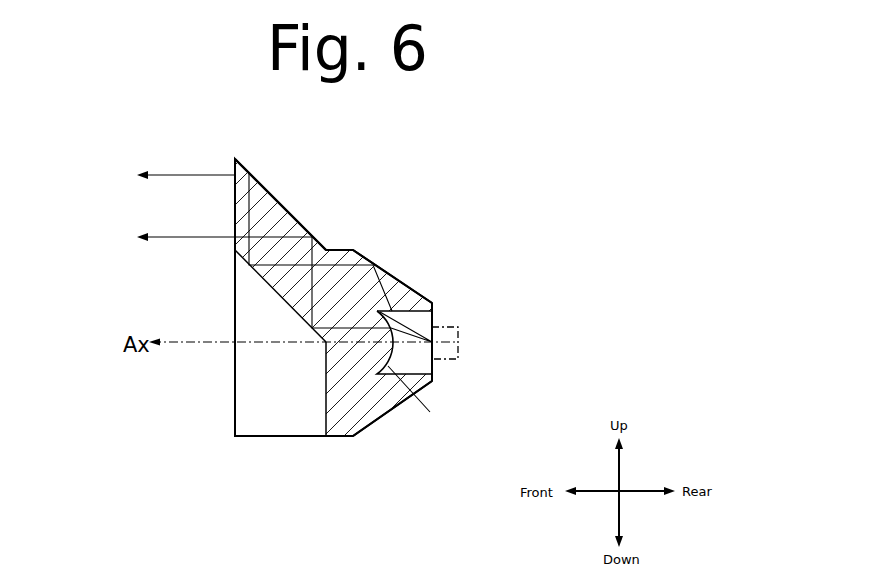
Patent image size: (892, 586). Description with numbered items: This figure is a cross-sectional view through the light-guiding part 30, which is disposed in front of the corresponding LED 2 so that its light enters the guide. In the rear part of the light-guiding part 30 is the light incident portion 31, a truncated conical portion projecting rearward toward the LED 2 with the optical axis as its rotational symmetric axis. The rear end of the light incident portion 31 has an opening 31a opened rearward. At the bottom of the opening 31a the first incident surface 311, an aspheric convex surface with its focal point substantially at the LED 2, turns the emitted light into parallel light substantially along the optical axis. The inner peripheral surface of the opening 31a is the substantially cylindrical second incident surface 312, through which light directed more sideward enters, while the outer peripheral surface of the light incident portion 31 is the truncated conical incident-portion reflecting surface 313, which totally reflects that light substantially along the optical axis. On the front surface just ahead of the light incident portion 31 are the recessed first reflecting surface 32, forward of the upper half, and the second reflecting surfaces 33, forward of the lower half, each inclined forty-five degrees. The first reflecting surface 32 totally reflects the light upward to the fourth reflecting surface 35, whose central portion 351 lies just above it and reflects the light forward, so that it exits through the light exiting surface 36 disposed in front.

The LED 2 is at (460, 357).
The light-guiding part 30 is at (397, 193).
The light incident portion 31 is at (438, 357).
The first incident surface 311 is at (406, 398).
The second incident surface 312 is at (420, 315).
The incident-portion reflecting surface 313 is at (393, 310).
The opening 31a is at (412, 360).
The first reflecting surface 32 is at (275, 301).
The second reflecting surfaces 33 is at (280, 427).
The fourth reflecting surface 35 is at (307, 195).
The central portion 351 is at (276, 201).
The light exiting surface 36 is at (173, 287).